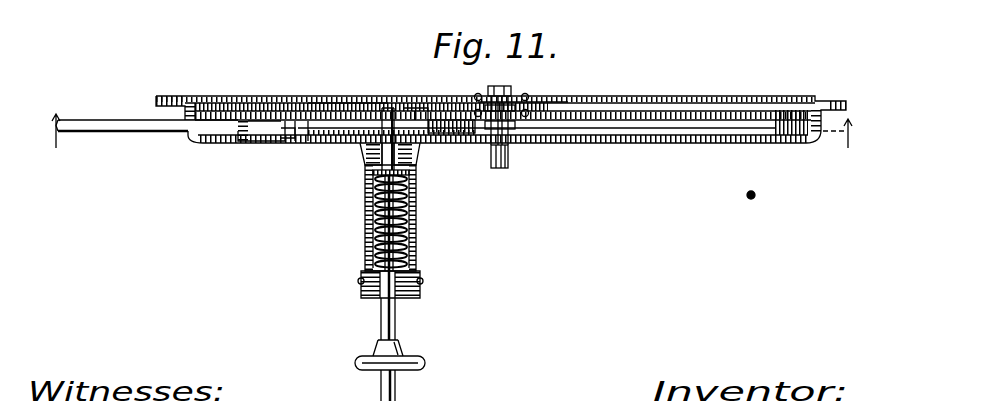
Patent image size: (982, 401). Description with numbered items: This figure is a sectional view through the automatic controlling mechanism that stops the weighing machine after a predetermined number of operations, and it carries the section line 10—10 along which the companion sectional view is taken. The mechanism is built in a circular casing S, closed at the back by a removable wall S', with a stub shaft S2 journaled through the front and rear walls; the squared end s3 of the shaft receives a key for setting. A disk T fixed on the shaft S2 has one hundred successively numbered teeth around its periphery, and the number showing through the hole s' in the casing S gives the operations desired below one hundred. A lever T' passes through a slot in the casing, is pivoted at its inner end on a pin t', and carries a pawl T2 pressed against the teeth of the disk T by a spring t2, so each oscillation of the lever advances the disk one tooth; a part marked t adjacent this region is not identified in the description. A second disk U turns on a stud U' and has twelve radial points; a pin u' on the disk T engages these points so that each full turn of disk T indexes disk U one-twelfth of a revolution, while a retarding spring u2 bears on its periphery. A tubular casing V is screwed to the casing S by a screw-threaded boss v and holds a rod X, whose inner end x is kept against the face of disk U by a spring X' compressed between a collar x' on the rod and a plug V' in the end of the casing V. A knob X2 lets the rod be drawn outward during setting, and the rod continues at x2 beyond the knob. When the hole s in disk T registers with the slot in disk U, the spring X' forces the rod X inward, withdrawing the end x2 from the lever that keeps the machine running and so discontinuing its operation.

The casing S is at (501, 150).
The removable wall S' is at (501, 86).
The stub shaft S2 is at (503, 80).
The hole s is at (416, 87).
The hole s' is at (256, 160).
The squared end s3 is at (503, 155).
The disk T is at (503, 96).
The lever T' is at (147, 157).
The pawl T2 is at (218, 90).
The strip t is at (534, 85).
The pin t' is at (280, 162).
The spring t2 is at (188, 90).
The second disk U is at (348, 78).
The stud U' is at (313, 156).
The pin u' is at (242, 178).
The retarding spring u2 is at (458, 137).
The tubular casing V is at (418, 218).
The plug V' is at (366, 302).
The screw-threaded boss v is at (410, 158).
The rod X is at (414, 257).
The spring X' is at (341, 222).
The knob X2 is at (347, 353).
The inner end x is at (391, 108).
The collar x' is at (359, 197).
The rod continuation x2 is at (387, 379).
The section line 10— 10 is at (457, 131).